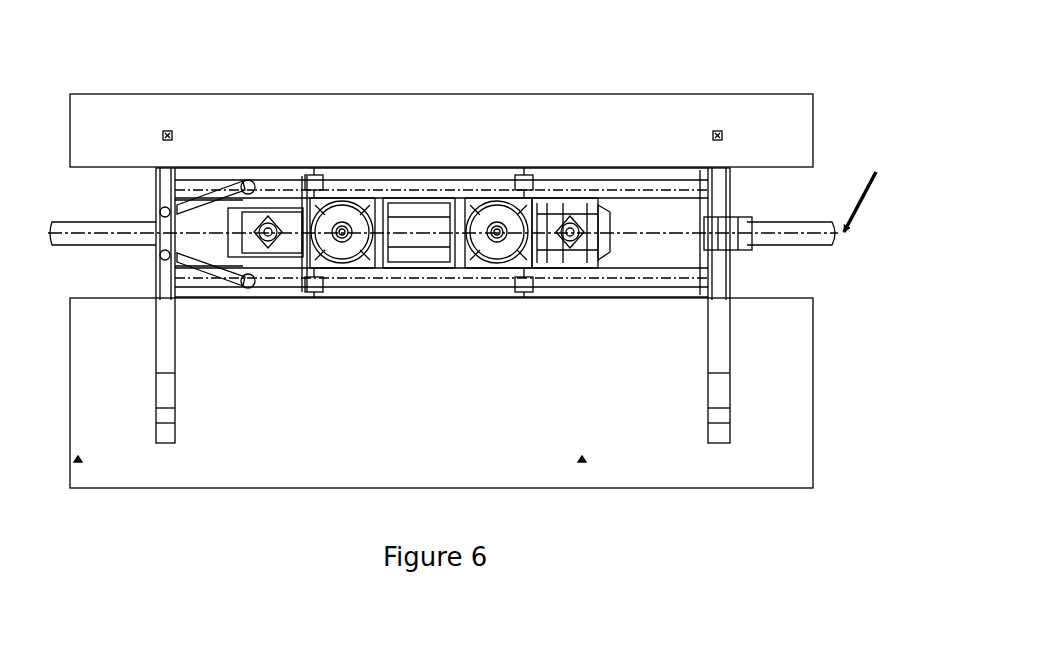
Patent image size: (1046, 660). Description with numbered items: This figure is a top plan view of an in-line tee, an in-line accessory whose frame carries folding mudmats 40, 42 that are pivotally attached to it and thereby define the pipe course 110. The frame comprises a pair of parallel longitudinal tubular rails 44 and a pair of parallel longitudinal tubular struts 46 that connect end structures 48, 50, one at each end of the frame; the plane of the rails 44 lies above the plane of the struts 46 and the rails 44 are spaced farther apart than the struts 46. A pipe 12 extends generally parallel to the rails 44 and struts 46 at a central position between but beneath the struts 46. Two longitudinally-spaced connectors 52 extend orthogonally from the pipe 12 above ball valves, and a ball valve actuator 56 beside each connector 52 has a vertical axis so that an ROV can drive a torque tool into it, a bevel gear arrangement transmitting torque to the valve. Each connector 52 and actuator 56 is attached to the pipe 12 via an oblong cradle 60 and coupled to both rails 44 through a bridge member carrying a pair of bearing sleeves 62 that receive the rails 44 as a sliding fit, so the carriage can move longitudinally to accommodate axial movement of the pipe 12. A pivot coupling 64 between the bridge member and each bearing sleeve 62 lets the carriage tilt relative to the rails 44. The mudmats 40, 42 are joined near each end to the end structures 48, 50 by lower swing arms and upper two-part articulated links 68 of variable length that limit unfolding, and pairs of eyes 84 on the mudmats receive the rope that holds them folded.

The pipe 12 is at (82, 226).
The folding mudmat 40 is at (445, 110).
The folding mudmat 42 is at (98, 412).
The longitudinal tubular rail 44 is at (425, 192).
The longitudinal tubular strut 46 is at (640, 190).
The end structure 48 is at (156, 212).
The end structure 50 is at (730, 194).
The connector 52 is at (342, 215).
The ball valve actuator 56 is at (276, 282).
The cradle 60 is at (246, 182).
The bearing sleeve 62 is at (300, 178).
The pivot coupling 64 is at (310, 176).
The two-part articulated link 68 is at (150, 325).
The eye 84 is at (80, 462).
The pipe course 110 is at (874, 191).